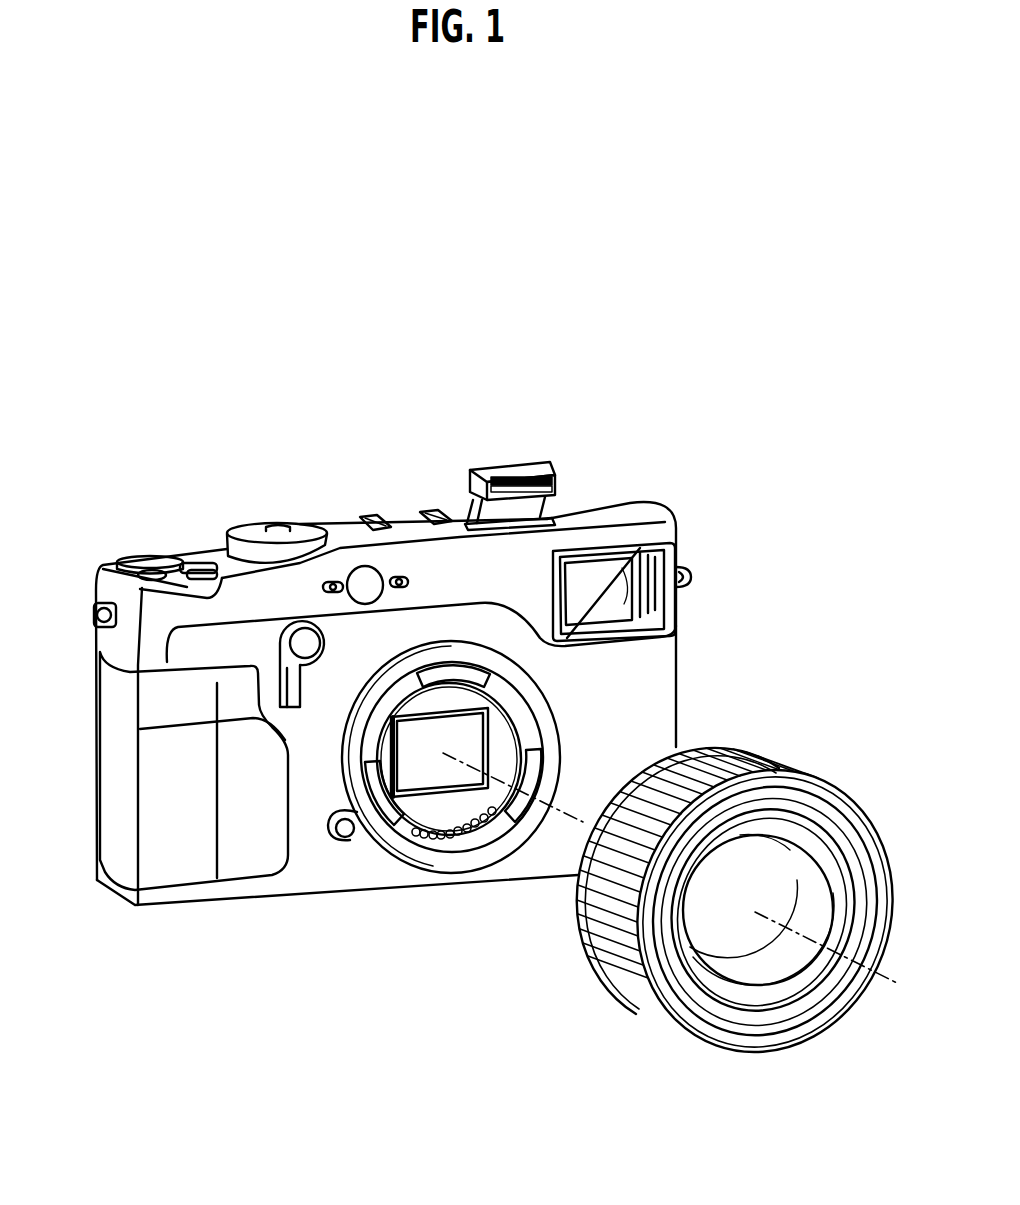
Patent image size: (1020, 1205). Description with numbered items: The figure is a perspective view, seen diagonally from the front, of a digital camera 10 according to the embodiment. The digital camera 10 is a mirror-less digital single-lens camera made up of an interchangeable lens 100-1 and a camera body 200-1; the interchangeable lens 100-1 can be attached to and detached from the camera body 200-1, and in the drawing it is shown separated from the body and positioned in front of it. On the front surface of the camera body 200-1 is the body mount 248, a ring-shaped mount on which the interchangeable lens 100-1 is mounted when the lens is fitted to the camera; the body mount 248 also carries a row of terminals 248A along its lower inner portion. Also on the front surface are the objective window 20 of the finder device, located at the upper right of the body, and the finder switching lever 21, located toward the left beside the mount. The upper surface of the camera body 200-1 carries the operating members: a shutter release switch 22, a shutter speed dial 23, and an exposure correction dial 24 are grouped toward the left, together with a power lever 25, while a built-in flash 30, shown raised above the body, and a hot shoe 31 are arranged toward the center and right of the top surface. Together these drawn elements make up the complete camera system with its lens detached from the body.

The digital camera 10 is at (680, 367).
The camera body 200-1 is at (585, 460).
The interchangeable lens 100-1 is at (647, 1042).
The objective window 20 is at (594, 571).
The finder switching lever 21 is at (140, 729).
The shutter release switch 22 is at (198, 562).
The shutter speed dial 23 is at (258, 541).
The exposure correction dial 24 is at (152, 557).
The power lever 25 is at (140, 589).
The built-in flash 30 is at (510, 470).
The hot shoe 31 is at (378, 517).
The body mount 248 is at (398, 862).
The body-side terminals 248A is at (470, 837).